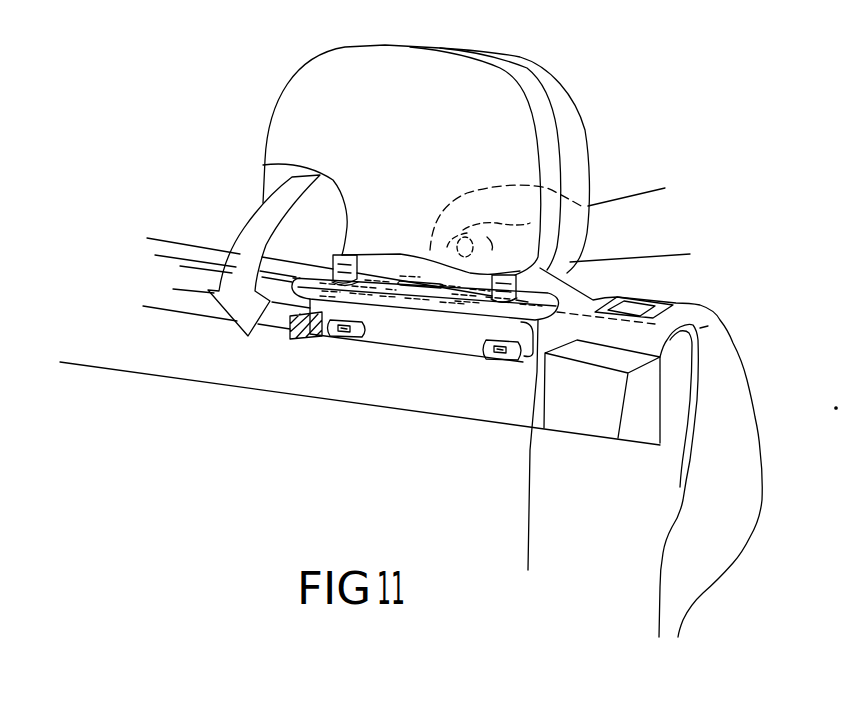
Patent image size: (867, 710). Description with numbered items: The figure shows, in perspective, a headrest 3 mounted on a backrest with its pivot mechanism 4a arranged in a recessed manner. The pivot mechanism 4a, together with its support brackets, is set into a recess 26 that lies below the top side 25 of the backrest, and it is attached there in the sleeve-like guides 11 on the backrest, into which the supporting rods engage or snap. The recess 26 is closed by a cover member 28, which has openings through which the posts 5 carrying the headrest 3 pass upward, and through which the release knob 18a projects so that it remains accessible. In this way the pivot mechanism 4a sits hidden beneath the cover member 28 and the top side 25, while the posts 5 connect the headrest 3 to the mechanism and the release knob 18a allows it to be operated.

The headrest 3 is at (297, 118).
The posts 5 is at (263, 165).
The cover member 28 is at (308, 278).
The pivot mechanism 4a is at (325, 298).
The recess 26 is at (390, 340).
The release knob 18a is at (420, 283).
The sleeve-like guides 11 is at (327, 343).
The top side 25 is at (650, 284).